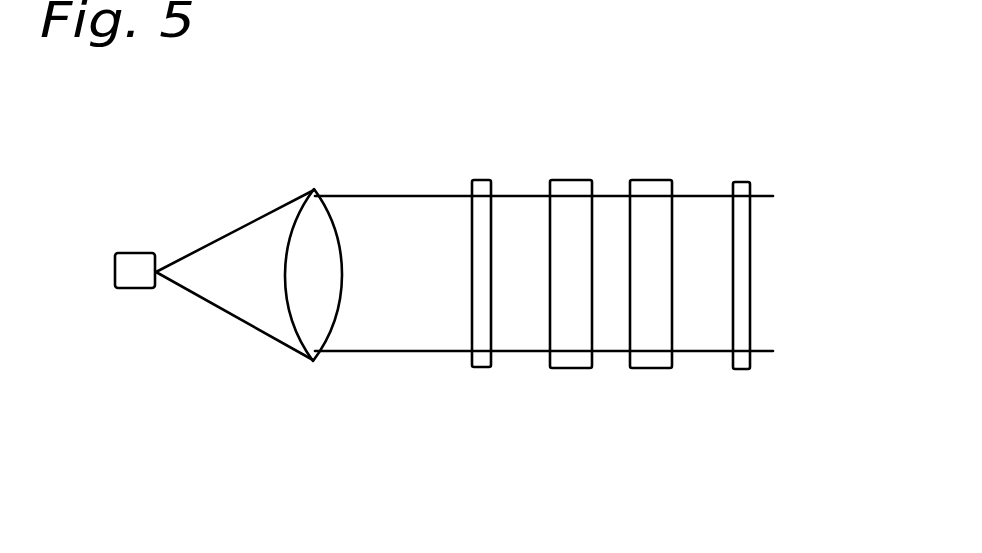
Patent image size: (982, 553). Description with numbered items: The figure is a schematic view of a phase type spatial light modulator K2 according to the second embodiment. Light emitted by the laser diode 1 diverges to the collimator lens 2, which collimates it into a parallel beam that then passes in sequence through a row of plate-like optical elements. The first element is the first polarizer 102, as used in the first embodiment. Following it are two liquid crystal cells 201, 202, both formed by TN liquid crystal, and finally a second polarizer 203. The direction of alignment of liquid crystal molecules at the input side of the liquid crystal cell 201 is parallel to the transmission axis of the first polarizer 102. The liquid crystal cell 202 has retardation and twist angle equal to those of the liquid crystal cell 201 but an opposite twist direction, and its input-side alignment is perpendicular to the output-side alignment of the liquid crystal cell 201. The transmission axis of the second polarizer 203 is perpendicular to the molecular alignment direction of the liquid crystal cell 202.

The laser diode 1 is at (130, 288).
The collimator lens 2 is at (310, 357).
The phase type spatial light modulator K2 is at (583, 125).
The first polarizer 102 is at (480, 370).
The liquid crystal cell 201 is at (573, 370).
The liquid crystal cell 202 is at (655, 370).
The second polarizer 203 is at (742, 370).